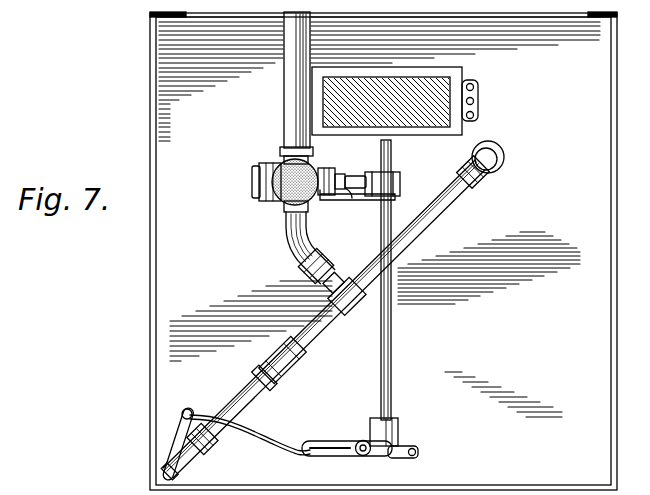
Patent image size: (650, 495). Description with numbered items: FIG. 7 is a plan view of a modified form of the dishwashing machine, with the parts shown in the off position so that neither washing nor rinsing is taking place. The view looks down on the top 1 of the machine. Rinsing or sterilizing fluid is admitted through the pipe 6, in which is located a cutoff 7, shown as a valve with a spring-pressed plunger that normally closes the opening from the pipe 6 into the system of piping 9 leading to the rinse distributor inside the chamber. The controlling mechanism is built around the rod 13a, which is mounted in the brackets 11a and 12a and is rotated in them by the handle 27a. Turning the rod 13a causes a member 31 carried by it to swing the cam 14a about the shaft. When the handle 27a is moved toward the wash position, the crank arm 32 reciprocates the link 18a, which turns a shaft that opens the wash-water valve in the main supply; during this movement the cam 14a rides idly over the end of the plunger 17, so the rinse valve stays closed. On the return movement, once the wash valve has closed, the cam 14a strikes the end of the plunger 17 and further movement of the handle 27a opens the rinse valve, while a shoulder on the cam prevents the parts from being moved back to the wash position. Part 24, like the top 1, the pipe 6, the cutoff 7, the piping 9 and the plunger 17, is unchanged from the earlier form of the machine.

The top of the machine 1 is at (383, 251).
The pipe 6 is at (288, 98).
The cutoff 7 is at (276, 195).
The system of piping 9 is at (438, 198).
The bracket 11a is at (325, 201).
The bracket 12a is at (397, 428).
The rod 13a is at (393, 340).
The cam 14a is at (352, 195).
The plunger 17 is at (345, 178).
The link 18a is at (270, 442).
The part common to the preceding structure 24 is at (182, 425).
The handle 27a is at (332, 440).
The member 31 is at (398, 176).
The crank arm 32 is at (405, 447).